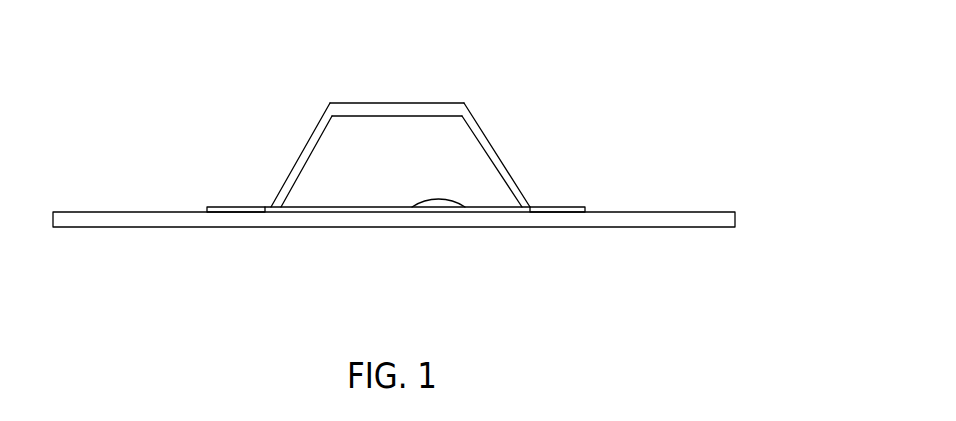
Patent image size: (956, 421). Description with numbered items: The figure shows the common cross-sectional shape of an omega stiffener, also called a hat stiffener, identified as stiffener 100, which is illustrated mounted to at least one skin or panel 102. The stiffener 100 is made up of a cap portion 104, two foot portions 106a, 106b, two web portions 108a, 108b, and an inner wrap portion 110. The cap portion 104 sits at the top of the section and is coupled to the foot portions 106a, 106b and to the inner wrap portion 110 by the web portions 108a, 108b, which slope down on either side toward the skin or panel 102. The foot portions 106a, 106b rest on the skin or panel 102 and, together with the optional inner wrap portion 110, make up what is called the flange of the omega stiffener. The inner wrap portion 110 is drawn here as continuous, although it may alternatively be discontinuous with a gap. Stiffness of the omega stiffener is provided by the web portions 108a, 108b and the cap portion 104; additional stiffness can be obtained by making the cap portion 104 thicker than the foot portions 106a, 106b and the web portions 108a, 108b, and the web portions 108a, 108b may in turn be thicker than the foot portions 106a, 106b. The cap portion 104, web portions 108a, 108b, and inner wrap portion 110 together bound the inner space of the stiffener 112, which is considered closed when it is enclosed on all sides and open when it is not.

The stiffener 100 is at (158, 56).
The skin or panel 102 is at (95, 228).
The cap portion 104 is at (433, 103).
The foot portion 106a is at (217, 205).
The foot portion 106b is at (565, 205).
The web portion 108a is at (288, 161).
The web portion 108b is at (502, 158).
The inner wrap portion 110 is at (457, 200).
The inner space of the stiffener 112 is at (368, 140).